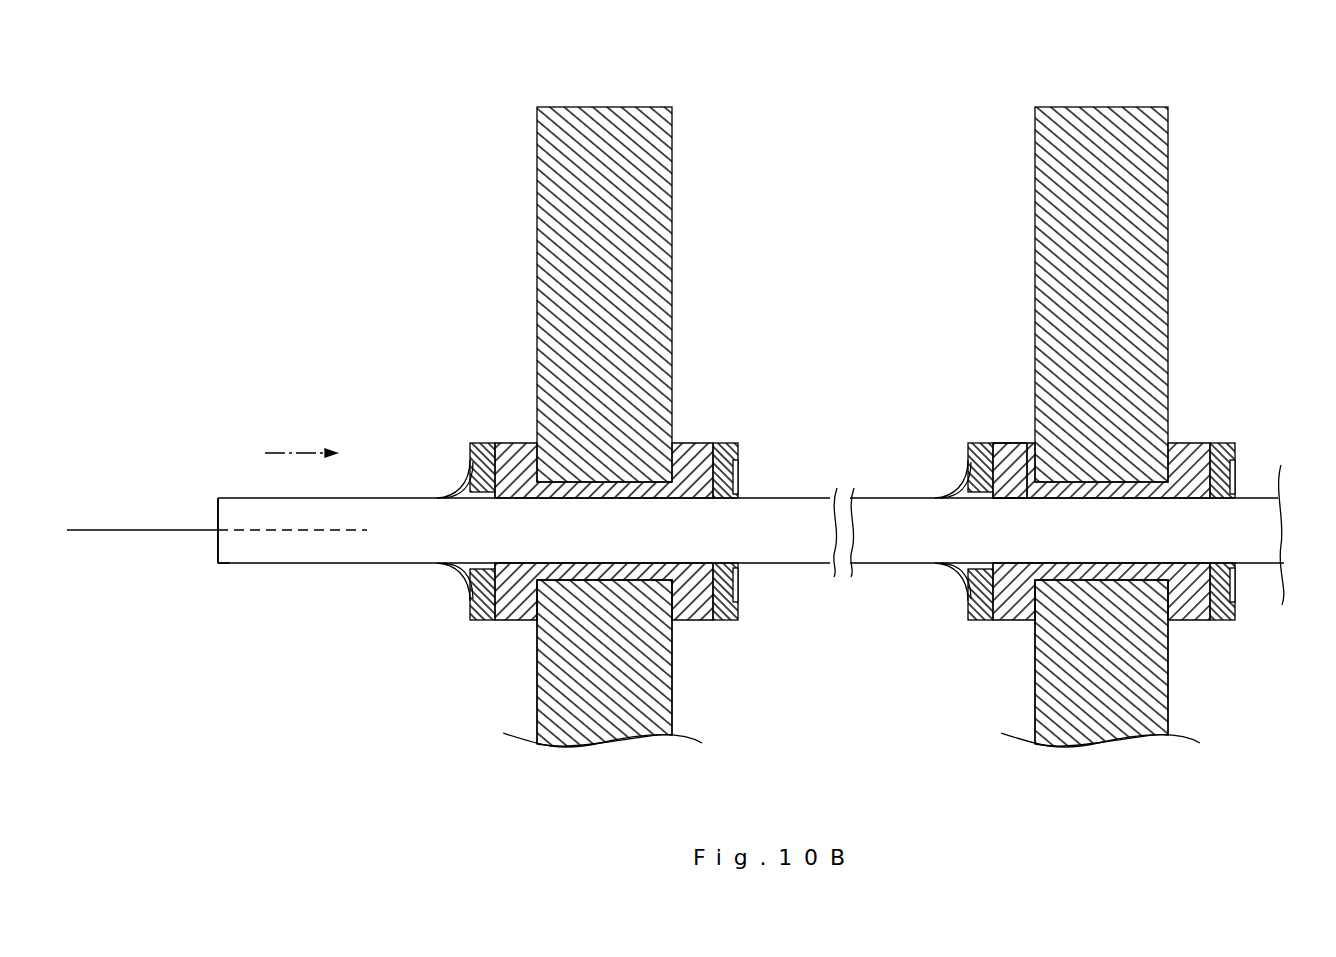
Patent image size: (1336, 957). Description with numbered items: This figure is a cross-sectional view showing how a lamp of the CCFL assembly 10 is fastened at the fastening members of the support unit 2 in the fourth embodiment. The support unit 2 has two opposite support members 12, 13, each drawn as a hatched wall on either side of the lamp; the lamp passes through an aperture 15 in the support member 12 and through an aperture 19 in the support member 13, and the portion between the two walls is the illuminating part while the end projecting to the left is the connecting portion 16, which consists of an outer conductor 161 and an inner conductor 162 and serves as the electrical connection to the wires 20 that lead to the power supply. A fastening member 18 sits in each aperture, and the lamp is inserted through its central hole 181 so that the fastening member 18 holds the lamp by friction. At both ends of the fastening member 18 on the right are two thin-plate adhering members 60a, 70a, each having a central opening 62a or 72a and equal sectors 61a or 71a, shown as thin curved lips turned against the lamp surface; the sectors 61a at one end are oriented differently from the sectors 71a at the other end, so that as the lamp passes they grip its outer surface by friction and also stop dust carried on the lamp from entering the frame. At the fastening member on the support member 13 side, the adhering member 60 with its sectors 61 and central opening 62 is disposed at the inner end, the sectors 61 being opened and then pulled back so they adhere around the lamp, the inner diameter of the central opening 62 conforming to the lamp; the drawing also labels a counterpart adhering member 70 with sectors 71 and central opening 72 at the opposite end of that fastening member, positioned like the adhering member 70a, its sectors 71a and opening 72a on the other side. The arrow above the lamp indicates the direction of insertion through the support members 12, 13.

The support unit 2 is at (1102, 427).
The CCFL assembly 10 is at (342, 553).
The support member 12 is at (1140, 292).
The support member 13 is at (650, 277).
The aperture 15 is at (1135, 483).
The connecting portion 16 is at (230, 578).
The fastening member 18 is at (1003, 440).
The aperture 19 is at (638, 482).
The wires 20 is at (142, 533).
The adhering member 60 is at (472, 443).
The sectors 61 is at (460, 478).
The central opening 62 is at (487, 567).
The second seal ring 70 is at (737, 445).
The second seal lip 71 is at (738, 477).
The second lower seal ring 72 is at (720, 565).
The adhering member 60a is at (1233, 445).
The sectors 61a is at (1235, 475).
The central opening 62a is at (1218, 570).
The adhering member 70a is at (968, 443).
The sectors 71a is at (957, 477).
The central opening 72a is at (985, 565).
The outer conductor 161 is at (198, 528).
The inner conductor 162 is at (240, 533).
The central hole 181 is at (1008, 458).